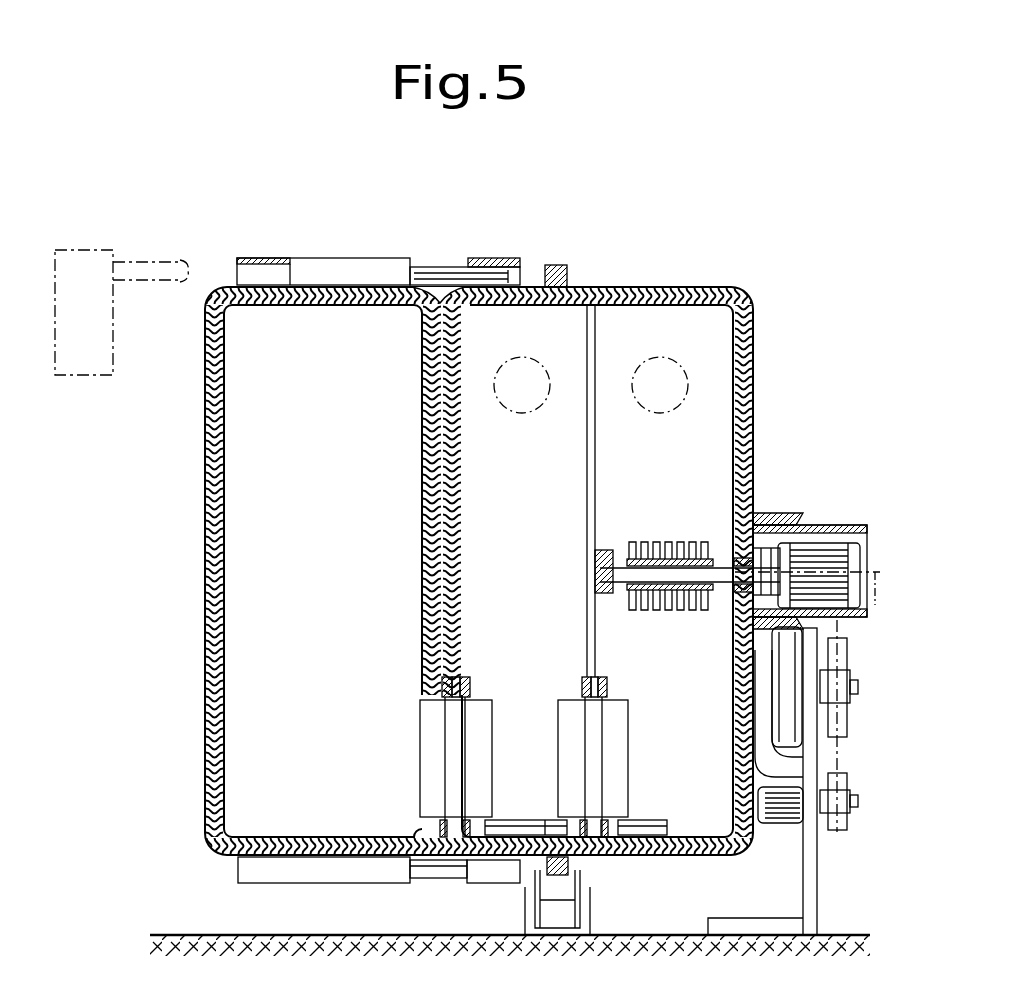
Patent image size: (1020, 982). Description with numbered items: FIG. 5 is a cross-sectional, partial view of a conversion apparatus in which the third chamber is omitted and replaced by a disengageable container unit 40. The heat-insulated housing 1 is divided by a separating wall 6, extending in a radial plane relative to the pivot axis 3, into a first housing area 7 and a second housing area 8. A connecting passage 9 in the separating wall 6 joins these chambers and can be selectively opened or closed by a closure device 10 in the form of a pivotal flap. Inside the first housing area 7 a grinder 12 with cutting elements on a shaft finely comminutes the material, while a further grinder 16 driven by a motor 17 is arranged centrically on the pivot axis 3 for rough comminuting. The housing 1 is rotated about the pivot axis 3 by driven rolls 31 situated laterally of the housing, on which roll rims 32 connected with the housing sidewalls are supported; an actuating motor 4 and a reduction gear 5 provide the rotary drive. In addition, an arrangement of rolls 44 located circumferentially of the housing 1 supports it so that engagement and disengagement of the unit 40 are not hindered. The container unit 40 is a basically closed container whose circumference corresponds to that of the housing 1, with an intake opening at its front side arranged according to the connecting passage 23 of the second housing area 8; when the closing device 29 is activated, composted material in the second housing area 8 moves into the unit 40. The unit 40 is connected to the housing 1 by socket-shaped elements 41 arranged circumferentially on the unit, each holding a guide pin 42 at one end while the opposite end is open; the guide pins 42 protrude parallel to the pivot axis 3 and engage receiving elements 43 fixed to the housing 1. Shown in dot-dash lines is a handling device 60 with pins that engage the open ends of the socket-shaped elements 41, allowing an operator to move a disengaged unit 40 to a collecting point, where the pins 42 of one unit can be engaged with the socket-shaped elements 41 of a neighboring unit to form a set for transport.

The handling device 60 is at (100, 252).
The socket-shaped elements 41 is at (322, 262).
The guide pins 42 is at (437, 267).
The receiving elements 43 is at (496, 259).
The grinder 12 is at (515, 370).
The second housing area 8 is at (556, 456).
The first housing area 7 is at (667, 456).
The housing 1 is at (753, 425).
The roll rims 32 is at (780, 512).
The motor 17 is at (830, 548).
The separating wall 6 is at (586, 500).
The further grinder 16 is at (657, 540).
The pivot axis 3 is at (873, 605).
The disengageable container unit 40 is at (248, 575).
The driven rolls 31 is at (786, 682).
The reduction gear 5 is at (840, 745).
The connecting passage 23 is at (440, 715).
The closing device 29 is at (420, 750).
The connecting passage 9 is at (590, 715).
The closure device 10 is at (615, 738).
The actuating motor 4 is at (783, 823).
The arrangement of rolls 44 is at (565, 908).